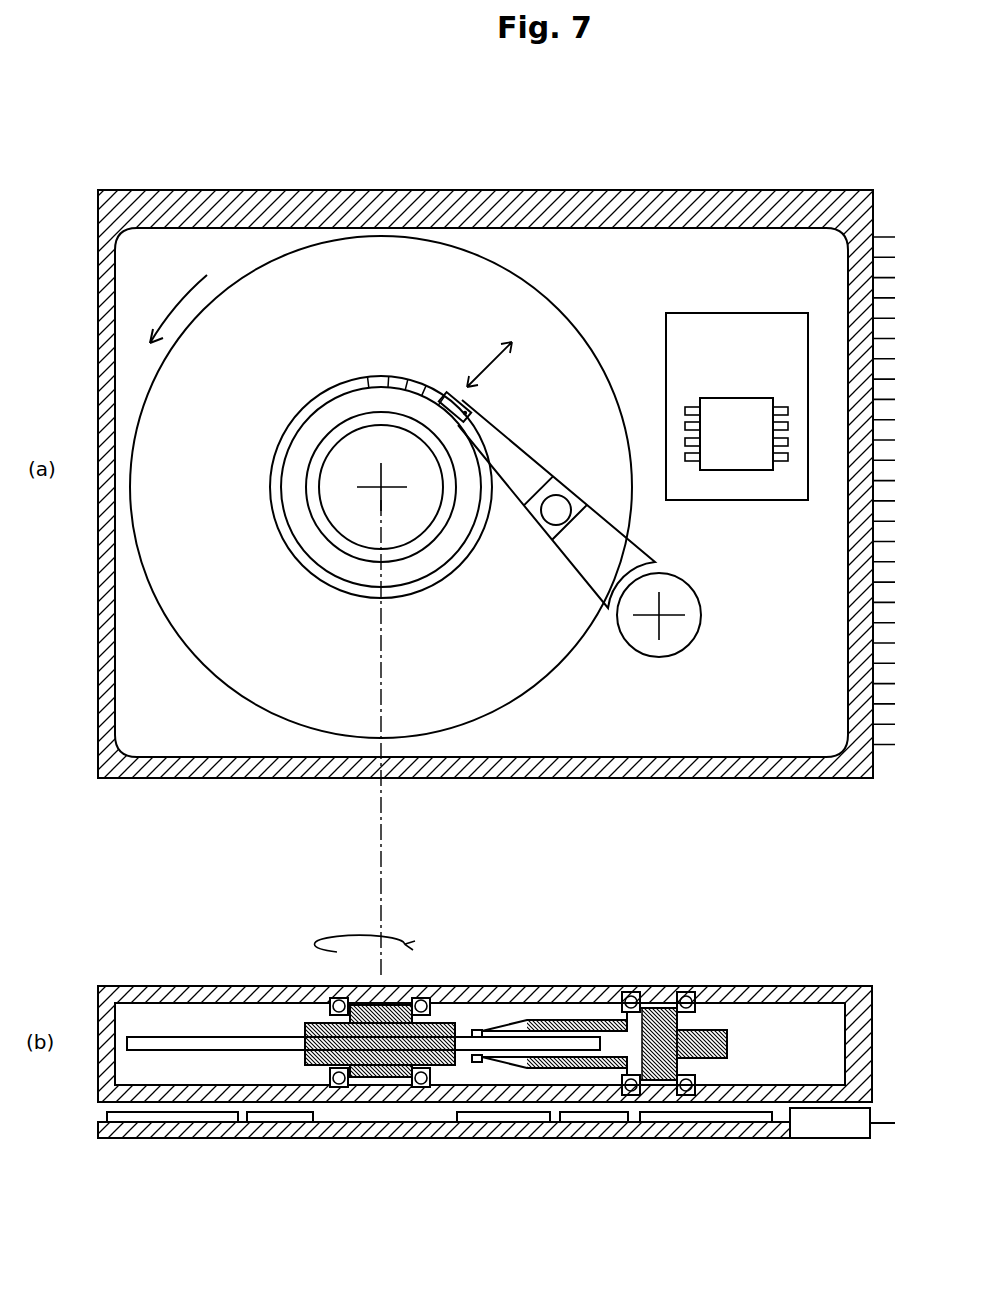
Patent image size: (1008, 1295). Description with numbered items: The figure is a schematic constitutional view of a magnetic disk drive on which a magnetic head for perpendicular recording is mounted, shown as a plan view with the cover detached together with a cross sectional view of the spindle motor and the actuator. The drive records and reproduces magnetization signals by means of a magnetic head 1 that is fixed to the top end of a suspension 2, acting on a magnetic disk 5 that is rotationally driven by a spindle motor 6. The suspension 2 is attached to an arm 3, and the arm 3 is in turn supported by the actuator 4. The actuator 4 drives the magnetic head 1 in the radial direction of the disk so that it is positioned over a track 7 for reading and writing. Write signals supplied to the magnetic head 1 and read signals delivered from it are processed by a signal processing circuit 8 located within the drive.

The magnetic head 1 is at (452, 392).
The suspension 2 is at (521, 462).
The arm 3 is at (615, 540).
The actuator 4 is at (699, 603).
The magnetic disk 5 is at (545, 318).
The spindle motor 6 is at (332, 500).
The track 7 is at (313, 571).
The signal processing circuit 8 is at (741, 398).